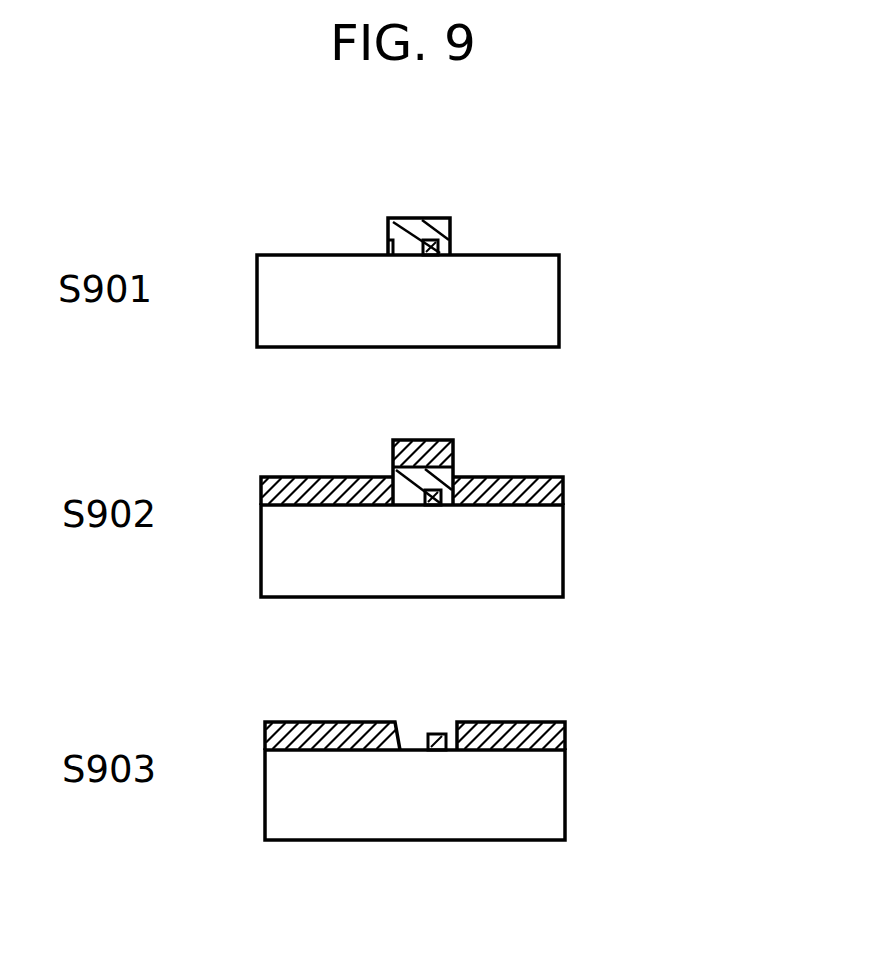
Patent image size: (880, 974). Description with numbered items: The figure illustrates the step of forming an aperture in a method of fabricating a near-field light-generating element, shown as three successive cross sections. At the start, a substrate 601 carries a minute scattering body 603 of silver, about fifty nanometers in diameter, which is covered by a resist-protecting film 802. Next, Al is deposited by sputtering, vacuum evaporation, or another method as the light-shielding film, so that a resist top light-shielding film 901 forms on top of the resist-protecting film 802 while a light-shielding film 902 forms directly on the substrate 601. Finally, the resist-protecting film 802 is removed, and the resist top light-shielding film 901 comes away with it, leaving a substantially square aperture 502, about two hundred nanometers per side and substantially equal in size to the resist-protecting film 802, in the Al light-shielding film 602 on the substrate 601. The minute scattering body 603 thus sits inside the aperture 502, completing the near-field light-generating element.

The substrate 601 is at (559, 258).
The resist-protecting film 802 is at (425, 213).
The minute scattering body 603 is at (430, 255).
The resist top light-shielding film 901 is at (455, 450).
The light-shielding film 902 is at (563, 482).
The aperture 502 is at (417, 727).
The light-shielding film 602 is at (565, 727).